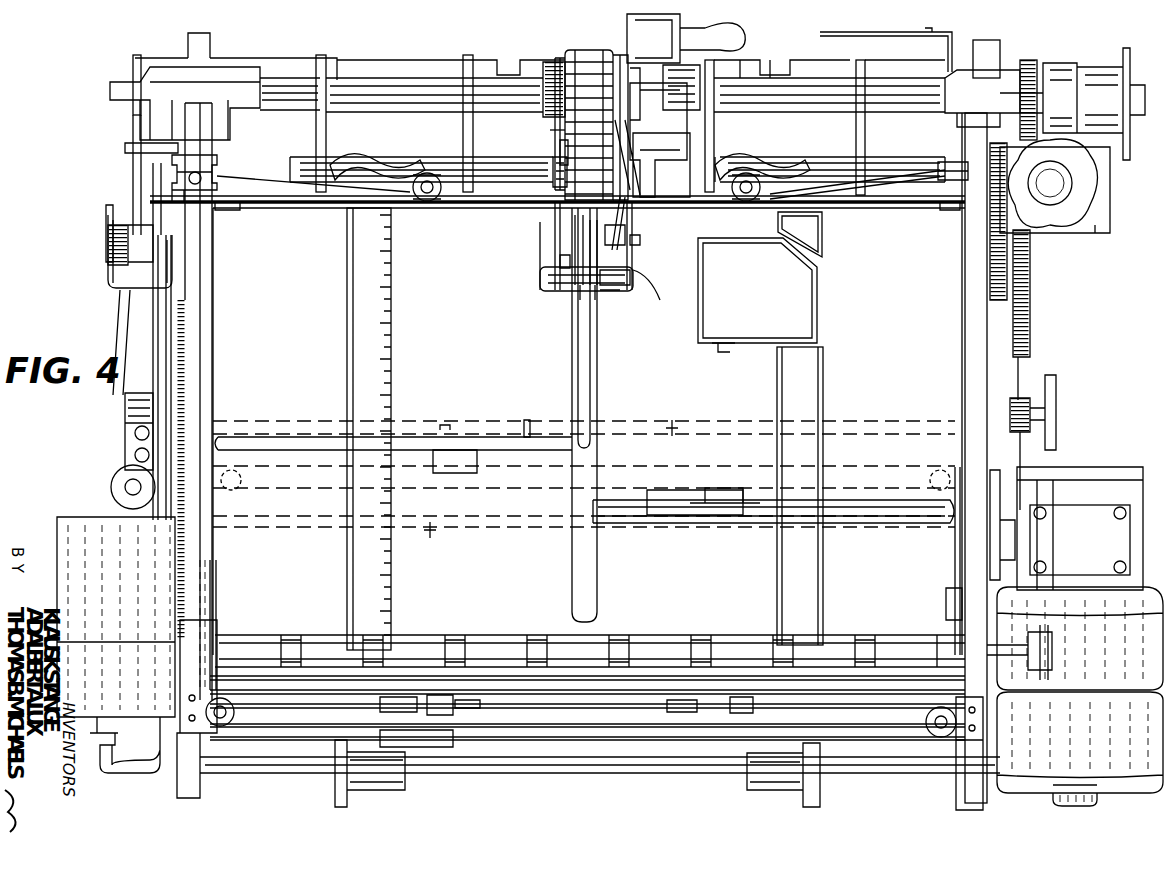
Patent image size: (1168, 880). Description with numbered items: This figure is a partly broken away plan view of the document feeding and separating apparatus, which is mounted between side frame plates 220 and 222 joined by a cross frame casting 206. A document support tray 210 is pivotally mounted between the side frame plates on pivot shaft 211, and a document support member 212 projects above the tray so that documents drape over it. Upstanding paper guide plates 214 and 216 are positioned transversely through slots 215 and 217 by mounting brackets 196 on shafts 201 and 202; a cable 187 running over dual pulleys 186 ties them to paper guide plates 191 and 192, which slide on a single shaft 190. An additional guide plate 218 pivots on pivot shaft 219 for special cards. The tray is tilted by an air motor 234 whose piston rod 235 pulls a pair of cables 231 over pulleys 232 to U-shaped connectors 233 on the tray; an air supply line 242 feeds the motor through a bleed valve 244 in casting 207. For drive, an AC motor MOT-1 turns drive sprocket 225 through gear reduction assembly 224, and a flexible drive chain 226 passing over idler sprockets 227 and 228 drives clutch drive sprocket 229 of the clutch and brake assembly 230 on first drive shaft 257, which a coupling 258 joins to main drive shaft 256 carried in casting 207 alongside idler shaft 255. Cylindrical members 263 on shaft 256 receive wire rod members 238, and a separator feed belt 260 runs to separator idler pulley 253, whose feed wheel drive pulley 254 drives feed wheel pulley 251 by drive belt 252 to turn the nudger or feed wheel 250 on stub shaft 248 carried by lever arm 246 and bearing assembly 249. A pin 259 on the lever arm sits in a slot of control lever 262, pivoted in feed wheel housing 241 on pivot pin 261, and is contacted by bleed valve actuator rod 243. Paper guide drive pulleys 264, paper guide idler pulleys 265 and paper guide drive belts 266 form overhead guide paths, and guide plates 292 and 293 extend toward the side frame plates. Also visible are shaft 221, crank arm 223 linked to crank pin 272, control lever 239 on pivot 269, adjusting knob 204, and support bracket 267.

The dual pulley 186 is at (226, 490).
The cable 187 is at (338, 490).
The single shaft 190 is at (568, 773).
The paper guide plate 191 is at (347, 785).
The paper guide plate 192 is at (805, 795).
The mounting bracket 196 is at (455, 440).
The shaft 201 is at (676, 424).
The shaft 202 is at (433, 538).
The adjusting knob 204 is at (1093, 180).
The cross frame casting 206 is at (232, 70).
The casting 207 is at (648, 112).
The document support tray 210 is at (425, 625).
The pivot shaft 211 is at (1048, 632).
The document support member 212 is at (597, 440).
The paper guide plate 214 is at (347, 292).
The slot 215 is at (272, 440).
The paper guide plate 216 is at (820, 378).
The slot 217 is at (718, 520).
The guide plate 218 is at (805, 298).
The pivot shaft 219 is at (720, 352).
The side frame plate 220 is at (965, 368).
The shaft 221 is at (133, 63).
The side frame plate 222 is at (207, 300).
The crank arm 223 is at (133, 122).
The gear reduction assembly 224 is at (1100, 500).
The drive sprocket 225 is at (1030, 505).
The flexible drive chain 226 is at (1025, 300).
The idler sprocket 227 is at (990, 548).
The idler sprocket 228 is at (1025, 400).
The clutch drive sprocket 229 is at (1037, 64).
The electromagnetically actuated clutch and brake assembly 230 is at (1070, 70).
The cable 231 is at (153, 183).
The pulley 232 is at (213, 160).
The U-shaped connector 233 is at (225, 210).
The air motor 234 is at (80, 525).
The piston rod 235 is at (125, 448).
The wire rod member 238 is at (608, 52).
The control lever 239 is at (128, 242).
The feed wheel housing 241 is at (610, 290).
The air supply line 242 is at (715, 58).
The bleed valve actuator rod 243 is at (648, 160).
The bleed valve 244 is at (618, 48).
The lever arm 246 is at (625, 238).
The stub shaft 248 is at (630, 280).
The bearing assembly 249 is at (628, 210).
The nudger or feed wheel 250 is at (578, 285).
The feed wheel pulley 251 is at (555, 252).
The drive belt 252 is at (556, 212).
The separator idler pulley 253 is at (565, 150).
The feed wheel drive pulley 254 is at (548, 160).
The idler shaft 255 is at (790, 172).
The main drive shaft 256 is at (790, 78).
The first drive shaft 257 is at (985, 42).
The coupling 258 is at (865, 80).
The pin 259 is at (640, 236).
The separator feed belt 260 is at (568, 50).
The pivot pin 261 is at (572, 255).
The control lever 262 is at (662, 294).
The cylindrical member 263 is at (548, 70).
The paper guide drive pulley 264 is at (326, 75).
The paper guide idler pulley 265 is at (328, 168).
The paper guide drive belt 266 is at (328, 140).
The support bracket 267 is at (1095, 228).
The pivot 269 is at (106, 216).
The crank pin 272 is at (128, 200).
The guide plate 292 is at (820, 34).
The guide plate 293 is at (290, 62).
The AC motor MOT-1 is at (1038, 788).